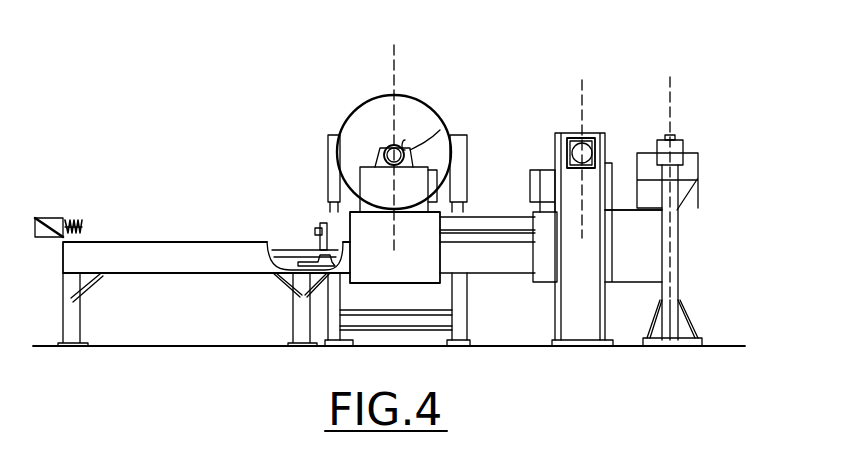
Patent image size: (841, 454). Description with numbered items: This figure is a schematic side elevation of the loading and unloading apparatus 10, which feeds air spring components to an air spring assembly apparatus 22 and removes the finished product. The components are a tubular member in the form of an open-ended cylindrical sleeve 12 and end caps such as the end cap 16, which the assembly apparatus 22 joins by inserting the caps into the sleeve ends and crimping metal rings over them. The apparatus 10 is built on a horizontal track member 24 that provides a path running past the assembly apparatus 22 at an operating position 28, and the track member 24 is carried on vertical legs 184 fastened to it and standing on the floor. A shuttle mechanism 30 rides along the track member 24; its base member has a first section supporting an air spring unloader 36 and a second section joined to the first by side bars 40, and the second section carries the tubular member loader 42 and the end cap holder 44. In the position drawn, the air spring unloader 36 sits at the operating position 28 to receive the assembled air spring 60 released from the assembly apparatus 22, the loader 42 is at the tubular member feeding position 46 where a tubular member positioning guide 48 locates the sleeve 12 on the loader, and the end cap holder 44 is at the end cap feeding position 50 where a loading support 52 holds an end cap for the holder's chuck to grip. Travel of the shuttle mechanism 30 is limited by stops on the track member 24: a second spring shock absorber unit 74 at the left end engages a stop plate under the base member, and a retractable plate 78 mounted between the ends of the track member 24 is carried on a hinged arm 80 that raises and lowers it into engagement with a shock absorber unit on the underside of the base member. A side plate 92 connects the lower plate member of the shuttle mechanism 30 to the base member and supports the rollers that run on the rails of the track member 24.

The loading and unloading apparatus 10 is at (698, 82).
The open-ended cylindrical sleeve 12 is at (405, 150).
The end cap 16 is at (410, 150).
The air spring assembly apparatus 22 is at (355, 118).
The track member 24 is at (188, 253).
The operating position 28 is at (393, 60).
The shuttle mechanism 30 is at (633, 215).
The air spring unloader 36 is at (370, 185).
The side bars 40 is at (492, 222).
The tubular member loader 42 is at (550, 173).
The end cap holder 44 is at (692, 165).
The tubular member feeding position 46 is at (582, 88).
The tubular member positioning guide 48 is at (593, 143).
The end cap feeding position 50 is at (670, 77).
The loading support 52 is at (678, 147).
The assembled air spring 60 is at (390, 147).
The second spring shock absorber unit 74 is at (50, 220).
The retractable plate 78 is at (318, 232).
The hinged arm 80 is at (328, 233).
The side plate 92 is at (645, 268).
The vertical legs 184 is at (80, 313).